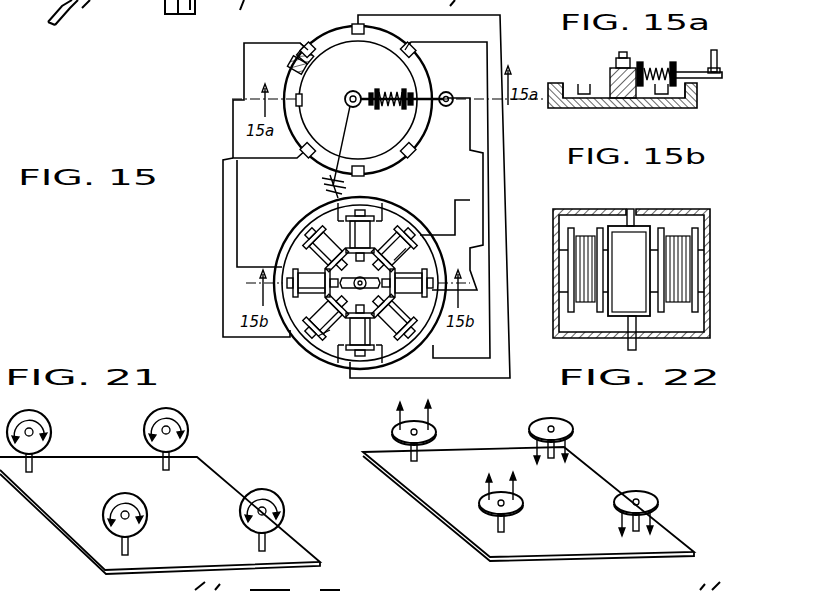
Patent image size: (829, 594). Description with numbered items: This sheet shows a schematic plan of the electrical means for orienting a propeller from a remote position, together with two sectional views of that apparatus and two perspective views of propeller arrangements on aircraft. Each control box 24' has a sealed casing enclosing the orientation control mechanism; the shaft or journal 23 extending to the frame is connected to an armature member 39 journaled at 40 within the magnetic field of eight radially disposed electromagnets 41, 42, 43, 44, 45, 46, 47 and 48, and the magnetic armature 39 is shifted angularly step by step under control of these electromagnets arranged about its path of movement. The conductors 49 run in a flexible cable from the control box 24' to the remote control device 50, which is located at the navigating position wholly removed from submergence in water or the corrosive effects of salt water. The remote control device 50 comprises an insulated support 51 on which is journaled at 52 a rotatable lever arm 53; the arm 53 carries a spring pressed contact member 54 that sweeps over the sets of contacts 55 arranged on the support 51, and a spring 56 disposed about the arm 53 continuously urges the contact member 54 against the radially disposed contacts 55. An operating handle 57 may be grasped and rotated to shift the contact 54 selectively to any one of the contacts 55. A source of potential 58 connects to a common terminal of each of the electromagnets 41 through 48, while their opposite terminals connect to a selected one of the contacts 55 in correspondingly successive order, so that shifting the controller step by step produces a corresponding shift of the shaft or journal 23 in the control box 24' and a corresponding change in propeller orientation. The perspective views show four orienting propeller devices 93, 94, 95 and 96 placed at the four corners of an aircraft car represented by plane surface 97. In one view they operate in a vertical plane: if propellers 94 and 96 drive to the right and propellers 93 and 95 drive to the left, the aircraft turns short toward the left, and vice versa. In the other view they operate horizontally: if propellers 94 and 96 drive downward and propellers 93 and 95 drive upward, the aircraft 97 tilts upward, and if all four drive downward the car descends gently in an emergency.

In FIG. 15B, the shaft or journal 23 is at (636, 342).
In FIG. 15, the control box 24' is at (428, 242).
In FIG. 15B, the control box 24' is at (702, 269).
In FIG. 15, the armature member 39 is at (318, 336).
In FIG. 15B, the armature member 39 is at (672, 208).
In FIG. 15B, the journal 40 is at (638, 212).
In FIG. 15, the electromagnet 41 is at (362, 237).
In FIG. 15, the electromagnet 42 is at (390, 246).
In FIG. 15, the electromagnet 43 is at (418, 276).
In FIG. 15B, the electromagnet 43 is at (686, 290).
In FIG. 15, the electromagnet 44 is at (425, 345).
In FIG. 15, the electromagnet 45 is at (364, 338).
In FIG. 15, the electromagnet 46 is at (322, 332).
In FIG. 15, the electromagnet 47 is at (312, 283).
In FIG. 15B, the electromagnet 47 is at (586, 258).
In FIG. 15, the electromagnet 48 is at (300, 255).
In FIG. 15, the conductors 49 is at (232, 178).
In FIG. 15, the remote control device 50 is at (334, 32).
In FIG. 15A, the insulated support 51 is at (575, 108).
In FIG. 15, the journal 52 is at (350, 94).
In FIG. 15A, the journal 52 is at (612, 78).
In FIG. 15, the rotatable lever arm 53 is at (446, 91).
In FIG. 15A, the rotatable lever arm 53 is at (692, 72).
In FIG. 15, the spring pressed contact member 54 is at (396, 110).
In FIG. 15A, the spring pressed contact member 54 is at (676, 60).
In FIG. 15, the contacts 55 is at (394, 52).
In FIG. 15A, the contacts 55 is at (560, 83).
In FIG. 15, the spring 56 is at (398, 90).
In FIG. 15A, the spring 56 is at (641, 66).
In FIG. 15A, the operating handle 57 is at (720, 66).
In FIG. 15, the source of potential 58 is at (322, 184).
In FIG. 21, the orienting propeller device 93 is at (56, 433).
In FIG. 22, the orienting propeller device 93 is at (436, 430).
In FIG. 21, the orienting propeller device 94 is at (195, 440).
In FIG. 22, the orienting propeller device 94 is at (572, 428).
In FIG. 21, the orienting propeller device 95 is at (150, 534).
In FIG. 22, the orienting propeller device 95 is at (523, 502).
In FIG. 21, the orienting propeller device 96 is at (290, 512).
In FIG. 22, the orienting propeller device 96 is at (652, 500).
In FIG. 21, the plane surface 97 is at (212, 484).
In FIG. 22, the plane surface 97 is at (590, 476).